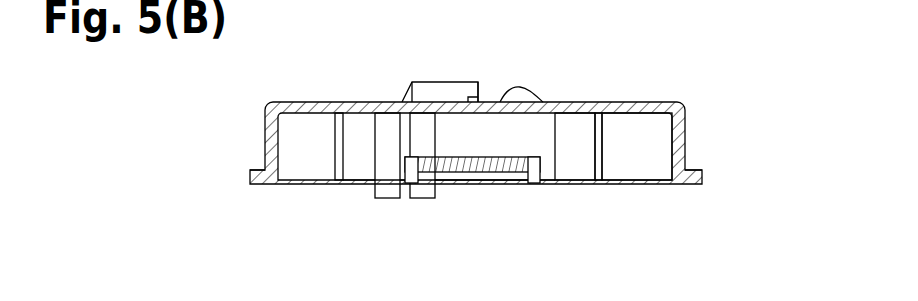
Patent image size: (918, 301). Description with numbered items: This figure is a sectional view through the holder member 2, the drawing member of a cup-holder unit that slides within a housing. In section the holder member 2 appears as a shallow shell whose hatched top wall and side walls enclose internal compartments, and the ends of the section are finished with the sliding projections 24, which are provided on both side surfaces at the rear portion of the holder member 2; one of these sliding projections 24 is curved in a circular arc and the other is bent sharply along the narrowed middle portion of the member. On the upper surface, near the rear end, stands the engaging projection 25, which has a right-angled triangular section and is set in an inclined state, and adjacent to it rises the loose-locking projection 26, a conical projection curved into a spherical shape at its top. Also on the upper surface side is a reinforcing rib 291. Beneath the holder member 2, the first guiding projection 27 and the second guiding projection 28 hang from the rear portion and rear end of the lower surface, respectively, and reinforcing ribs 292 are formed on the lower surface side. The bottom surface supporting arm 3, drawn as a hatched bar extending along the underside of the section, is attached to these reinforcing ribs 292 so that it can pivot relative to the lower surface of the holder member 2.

The holder member 2 is at (735, 106).
The bottom surface supporting arm 3 is at (502, 170).
The sliding projection 24 is at (248, 180).
The engaging projection 25 is at (432, 87).
The loose-locking projection 26 is at (537, 93).
The first guiding projection 27 is at (388, 196).
The second guiding projection 28 is at (423, 197).
The reinforcing rib 291 is at (470, 88).
The reinforcing rib 292 is at (331, 157).